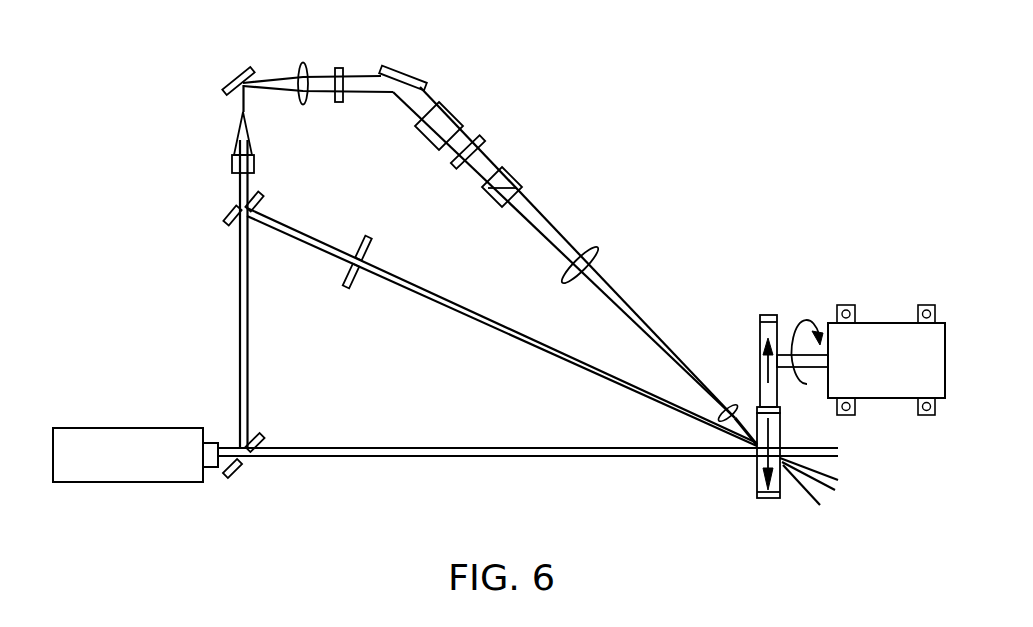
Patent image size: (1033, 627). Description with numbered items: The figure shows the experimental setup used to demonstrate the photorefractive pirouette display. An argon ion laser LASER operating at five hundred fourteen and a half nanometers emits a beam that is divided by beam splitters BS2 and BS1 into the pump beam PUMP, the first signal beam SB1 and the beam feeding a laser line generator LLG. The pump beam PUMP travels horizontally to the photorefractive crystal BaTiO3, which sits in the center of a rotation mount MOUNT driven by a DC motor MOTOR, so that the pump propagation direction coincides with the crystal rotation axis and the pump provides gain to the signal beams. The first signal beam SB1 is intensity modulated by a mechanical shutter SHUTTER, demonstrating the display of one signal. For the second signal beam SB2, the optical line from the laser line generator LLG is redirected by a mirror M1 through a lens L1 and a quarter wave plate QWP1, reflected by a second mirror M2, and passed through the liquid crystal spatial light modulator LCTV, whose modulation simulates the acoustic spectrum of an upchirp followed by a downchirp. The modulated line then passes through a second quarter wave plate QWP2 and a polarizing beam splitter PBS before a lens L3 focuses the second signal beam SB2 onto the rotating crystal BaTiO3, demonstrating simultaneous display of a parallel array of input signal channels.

The argon ion laser LASER is at (135, 410).
The pump beam PUMP is at (387, 448).
The beam splitter BS1 is at (228, 214).
The beam splitter BS2 is at (246, 462).
The laser line generator LLG is at (168, 133).
The mirror M1 is at (235, 76).
The mirror M2 is at (403, 70).
The lens L1 is at (301, 72).
The lens L3 is at (585, 264).
The quarter wave plate QWP1 is at (335, 72).
The quarter wave plate QWP2 is at (485, 149).
The liquid crystal spatial light modulator LCTV is at (465, 119).
The polarizing beam splitter PBS is at (524, 187).
The signal beam 1 SB1 is at (553, 360).
The signal beam 2 SB2 is at (617, 293).
The shutter SHUTTER is at (331, 274).
The rotation mount MOUNT is at (769, 439).
The photorefractive crystal BaTiO3 is at (757, 468).
The DC motor MOTOR is at (861, 360).